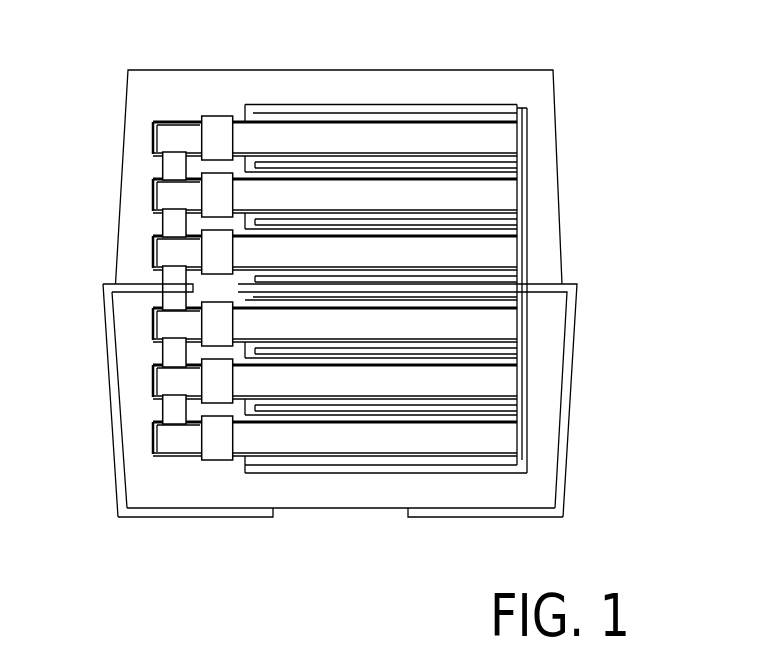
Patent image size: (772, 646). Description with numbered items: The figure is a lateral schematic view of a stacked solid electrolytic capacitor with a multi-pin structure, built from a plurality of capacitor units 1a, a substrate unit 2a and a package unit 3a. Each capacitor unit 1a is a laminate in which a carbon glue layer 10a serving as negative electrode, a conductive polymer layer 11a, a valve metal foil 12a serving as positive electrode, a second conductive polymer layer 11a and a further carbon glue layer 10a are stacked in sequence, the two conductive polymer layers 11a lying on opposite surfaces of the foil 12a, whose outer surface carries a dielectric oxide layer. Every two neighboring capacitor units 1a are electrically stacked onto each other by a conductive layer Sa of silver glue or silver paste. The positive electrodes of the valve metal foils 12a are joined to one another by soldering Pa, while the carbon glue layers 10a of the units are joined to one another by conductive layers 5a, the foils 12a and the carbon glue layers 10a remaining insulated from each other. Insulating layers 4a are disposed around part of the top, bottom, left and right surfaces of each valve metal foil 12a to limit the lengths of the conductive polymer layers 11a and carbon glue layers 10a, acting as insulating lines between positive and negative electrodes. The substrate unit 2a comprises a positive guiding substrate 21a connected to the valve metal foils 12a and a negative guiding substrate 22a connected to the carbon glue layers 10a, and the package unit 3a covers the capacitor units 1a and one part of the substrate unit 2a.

The capacitor unit 1a is at (675, 17).
The carbon glue layer 10a is at (477, 117).
The conductive polymer layer 11a is at (500, 120).
The valve metal foil 12a is at (502, 137).
The substrate unit 2a is at (422, 572).
The positive guiding substrate 21a is at (250, 517).
The negative guiding substrate 22a is at (430, 517).
The package unit 3a is at (122, 75).
The insulating layer 4a is at (208, 106).
The conductive layer 5a is at (539, 212).
The soldering Pa is at (152, 167).
The conductive layer Sa is at (527, 167).